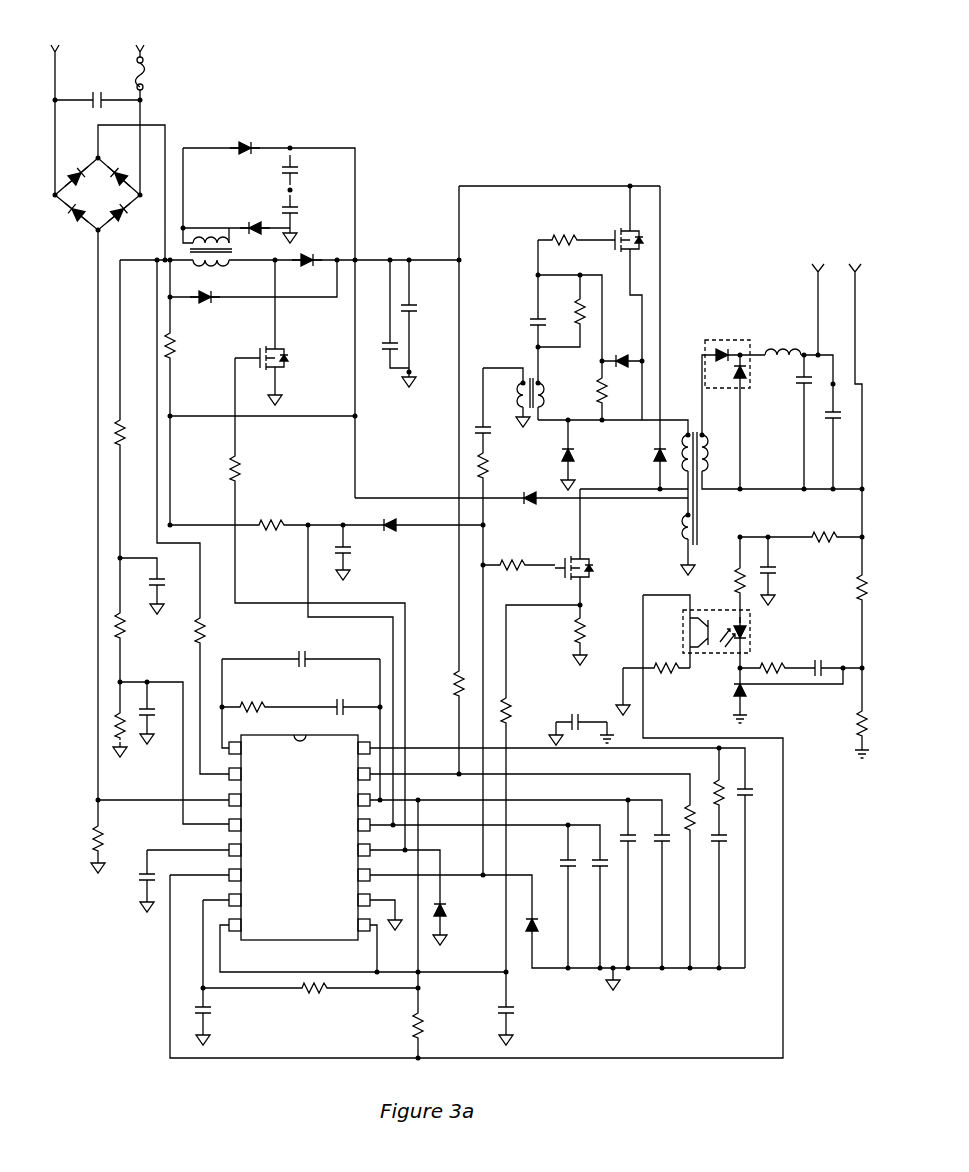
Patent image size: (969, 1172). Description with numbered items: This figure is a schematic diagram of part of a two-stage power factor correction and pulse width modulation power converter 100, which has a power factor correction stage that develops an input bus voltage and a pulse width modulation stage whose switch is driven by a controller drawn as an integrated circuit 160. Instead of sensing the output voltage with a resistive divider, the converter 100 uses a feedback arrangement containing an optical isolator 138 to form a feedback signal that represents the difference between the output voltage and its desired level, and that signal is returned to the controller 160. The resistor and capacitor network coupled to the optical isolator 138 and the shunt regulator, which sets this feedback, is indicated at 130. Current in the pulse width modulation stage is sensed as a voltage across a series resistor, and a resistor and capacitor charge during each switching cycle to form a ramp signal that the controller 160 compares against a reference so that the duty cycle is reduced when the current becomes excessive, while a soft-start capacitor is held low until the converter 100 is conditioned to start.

The two-stage power factor correction and pulse width modulation power converter 100 is at (775, 106).
The controller integrated circuit 160 is at (298, 735).
The optical isolator 138 is at (700, 642).
The feedback compensation network 130 is at (826, 650).